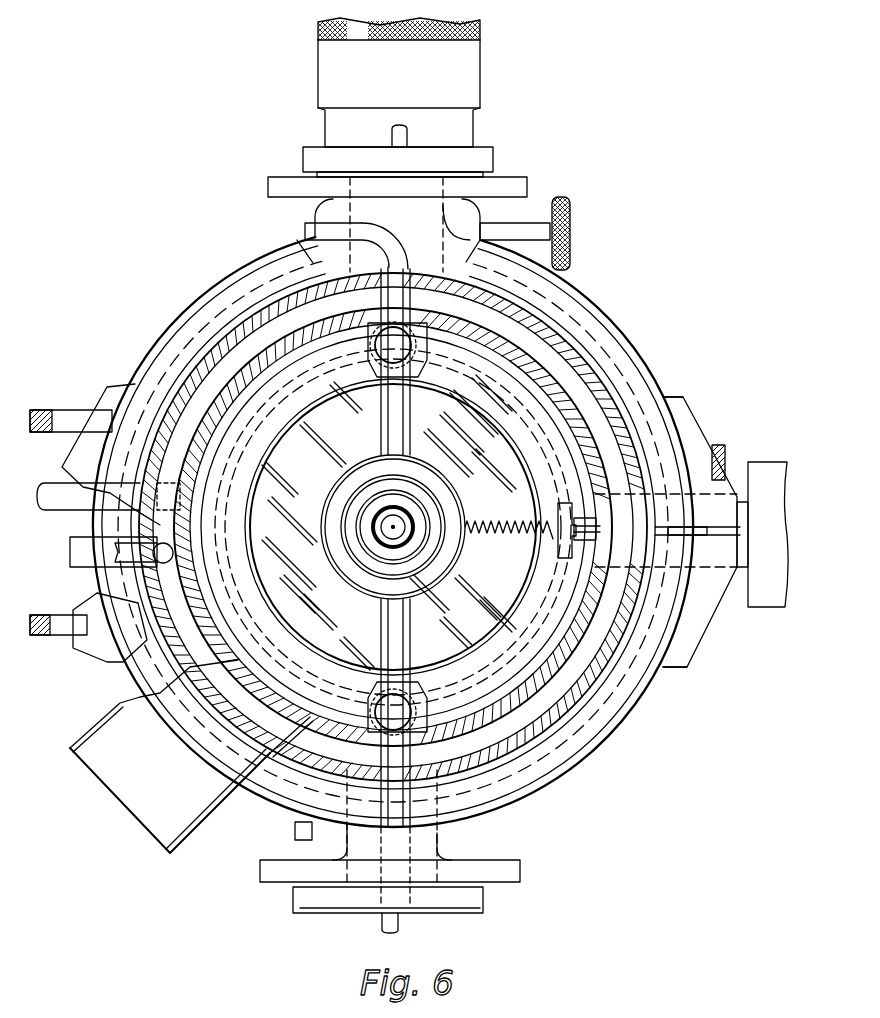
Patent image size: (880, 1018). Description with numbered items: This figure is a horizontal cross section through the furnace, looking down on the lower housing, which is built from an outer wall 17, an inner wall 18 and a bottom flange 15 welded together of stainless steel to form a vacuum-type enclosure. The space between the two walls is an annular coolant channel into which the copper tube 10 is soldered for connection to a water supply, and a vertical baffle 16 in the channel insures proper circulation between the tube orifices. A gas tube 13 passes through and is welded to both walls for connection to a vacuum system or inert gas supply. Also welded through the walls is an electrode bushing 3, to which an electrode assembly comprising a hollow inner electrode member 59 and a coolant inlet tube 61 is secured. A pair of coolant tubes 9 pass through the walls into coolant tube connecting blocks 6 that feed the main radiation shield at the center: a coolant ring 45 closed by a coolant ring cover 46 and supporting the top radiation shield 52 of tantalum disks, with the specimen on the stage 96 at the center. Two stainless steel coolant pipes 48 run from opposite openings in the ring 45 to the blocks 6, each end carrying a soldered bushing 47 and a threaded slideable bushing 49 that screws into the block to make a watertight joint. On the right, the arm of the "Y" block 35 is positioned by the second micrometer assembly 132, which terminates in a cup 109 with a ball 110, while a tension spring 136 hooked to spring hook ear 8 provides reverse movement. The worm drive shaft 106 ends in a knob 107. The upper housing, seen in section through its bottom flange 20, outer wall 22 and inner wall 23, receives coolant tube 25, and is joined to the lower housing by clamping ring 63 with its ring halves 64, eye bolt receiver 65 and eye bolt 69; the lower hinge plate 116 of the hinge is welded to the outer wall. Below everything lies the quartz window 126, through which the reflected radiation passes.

The electrode bushing 3 is at (527, 186).
The coolant tube connecting block 6 is at (428, 355).
The spring hook ear 8 is at (603, 506).
The coolant tube 9 is at (305, 229).
The copper tube 10 is at (70, 548).
The gas tube 13 is at (90, 723).
The bottom flange 15 is at (140, 592).
The vertical baffle 16 is at (143, 533).
The outer wall 17 is at (406, 238).
The inner wall 18 is at (438, 243).
The bottom flange 20 is at (210, 306).
The outer wall 22 is at (565, 335).
The inner wall 23 is at (584, 355).
The coolant tube 25 is at (66, 480).
The "Y" block 35 is at (560, 505).
The coolant ring 45 is at (365, 588).
The coolant ring cover 46 is at (352, 474).
The bushing 47 is at (371, 700).
The coolant pipe 48 is at (381, 410).
The bushing 49 is at (372, 356).
The top radiation shield 52 is at (363, 510).
The inner electrode member 59 is at (493, 157).
The coolant inlet tube 61 is at (409, 135).
The clamping ring 63 is at (727, 407).
The ring halves 64 is at (630, 362).
The eye bolt receiver 65 is at (669, 397).
The eye bolt 69 is at (718, 445).
The stage 96 is at (362, 543).
The shaft 106 is at (549, 227).
The knob 107 is at (569, 196).
The cup 109 is at (580, 565).
The ball 110 is at (576, 562).
The lower hinge plate 116 is at (56, 410).
The quartz window 126 is at (466, 637).
The second micrometer assembly 132 is at (485, 62).
The tension spring 136 is at (504, 520).